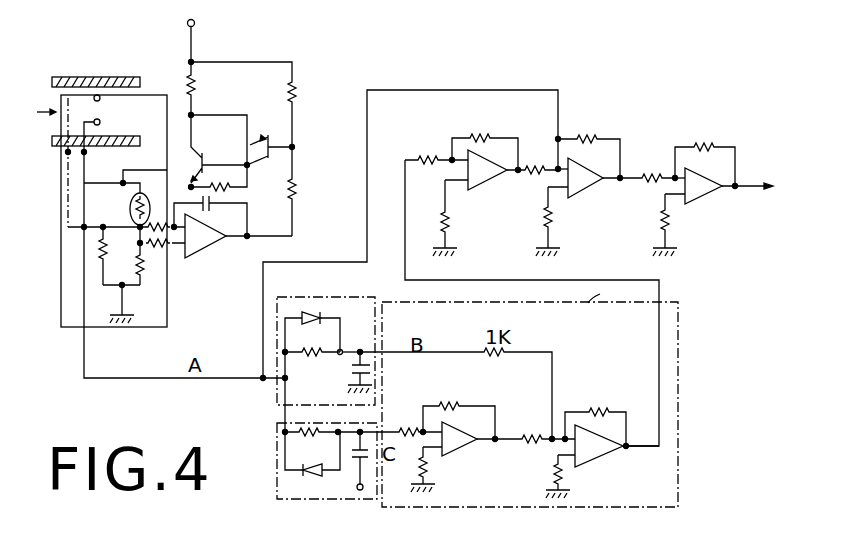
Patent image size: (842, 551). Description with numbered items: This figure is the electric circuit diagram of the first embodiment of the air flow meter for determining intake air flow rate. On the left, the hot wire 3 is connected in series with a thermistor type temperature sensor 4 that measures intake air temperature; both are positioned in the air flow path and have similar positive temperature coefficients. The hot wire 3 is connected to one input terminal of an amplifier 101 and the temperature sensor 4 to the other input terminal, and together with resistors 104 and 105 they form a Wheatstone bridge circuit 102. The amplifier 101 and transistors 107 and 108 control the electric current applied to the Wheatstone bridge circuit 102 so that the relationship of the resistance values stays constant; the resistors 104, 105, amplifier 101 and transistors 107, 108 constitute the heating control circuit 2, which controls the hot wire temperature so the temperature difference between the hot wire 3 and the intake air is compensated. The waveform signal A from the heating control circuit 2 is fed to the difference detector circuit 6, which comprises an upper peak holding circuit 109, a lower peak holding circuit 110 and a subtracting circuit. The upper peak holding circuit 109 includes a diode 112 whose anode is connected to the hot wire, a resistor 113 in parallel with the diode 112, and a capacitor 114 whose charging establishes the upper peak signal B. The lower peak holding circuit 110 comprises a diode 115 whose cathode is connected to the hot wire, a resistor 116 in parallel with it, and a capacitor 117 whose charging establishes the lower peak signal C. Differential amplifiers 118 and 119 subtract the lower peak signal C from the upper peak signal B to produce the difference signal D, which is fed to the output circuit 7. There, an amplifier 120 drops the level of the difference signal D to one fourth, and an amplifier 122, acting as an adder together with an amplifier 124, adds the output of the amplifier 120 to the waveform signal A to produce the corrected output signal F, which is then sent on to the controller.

The heating control circuit 2 is at (217, 54).
The hot wire 3 is at (99, 112).
The thermistor type temperature sensor 4 is at (130, 208).
The difference detector circuit 6 is at (467, 325).
The output circuit 7 is at (477, 88).
The amplifier 101 is at (207, 246).
The Wheatstone bridge circuit 102 is at (64, 328).
The resistor 104 is at (95, 262).
The resistor 105 is at (143, 267).
The transistor 107 is at (248, 146).
The transistor 108 is at (219, 149).
The upper peak holding circuit 109 is at (337, 298).
The lower peak holding circuit 110 is at (293, 500).
The diode 112 is at (309, 310).
The resistor 113 is at (315, 367).
The capacitor 114 is at (366, 362).
The diode 115 is at (306, 478).
The resistor 116 is at (312, 438).
The capacitor 117 is at (366, 461).
The differential amplifier 118 is at (463, 447).
The differential amplifier 119 is at (603, 458).
The amplifier 120 is at (484, 178).
The amplifier 122 is at (585, 189).
The amplifier 124 is at (713, 199).